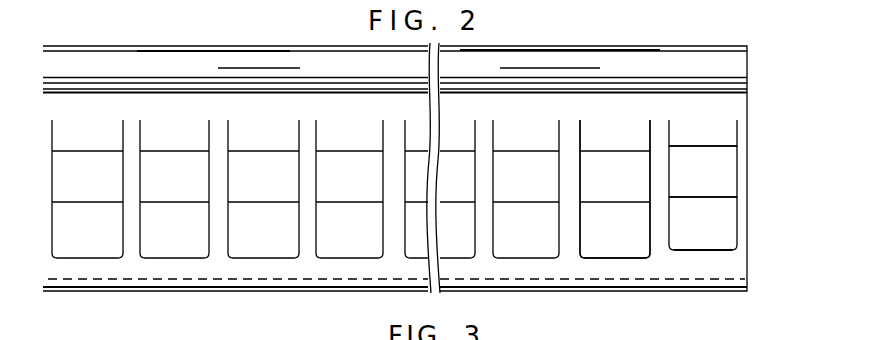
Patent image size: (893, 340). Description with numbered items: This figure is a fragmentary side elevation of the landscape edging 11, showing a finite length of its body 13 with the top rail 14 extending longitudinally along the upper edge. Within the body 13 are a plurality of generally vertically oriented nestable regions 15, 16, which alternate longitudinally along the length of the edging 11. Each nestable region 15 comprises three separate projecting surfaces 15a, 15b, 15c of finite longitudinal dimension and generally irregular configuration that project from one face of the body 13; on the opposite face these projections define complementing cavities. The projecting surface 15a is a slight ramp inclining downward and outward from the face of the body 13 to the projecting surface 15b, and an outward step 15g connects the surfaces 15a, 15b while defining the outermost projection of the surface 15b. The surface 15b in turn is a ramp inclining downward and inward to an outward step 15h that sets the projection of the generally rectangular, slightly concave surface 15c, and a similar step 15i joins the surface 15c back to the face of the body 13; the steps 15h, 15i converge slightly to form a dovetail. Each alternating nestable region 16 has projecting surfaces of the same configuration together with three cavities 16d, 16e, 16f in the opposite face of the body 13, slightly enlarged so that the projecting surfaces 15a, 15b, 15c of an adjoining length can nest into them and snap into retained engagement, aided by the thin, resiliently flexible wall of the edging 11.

The landscape edging 11 is at (248, 33).
The body 13 is at (290, 270).
The top rail 14 is at (628, 57).
The nestable region 15 is at (177, 240).
The nestable region 16 is at (91, 243).
The projecting surface 15a is at (722, 132).
The projecting surface 15b is at (720, 181).
The projecting surface 15c is at (720, 229).
The outward step 15g is at (685, 143).
The outward step 15h is at (686, 200).
The step 15i is at (686, 253).
The cavity 16d is at (637, 142).
The cavity 16e is at (637, 193).
The cavity 16f is at (637, 243).